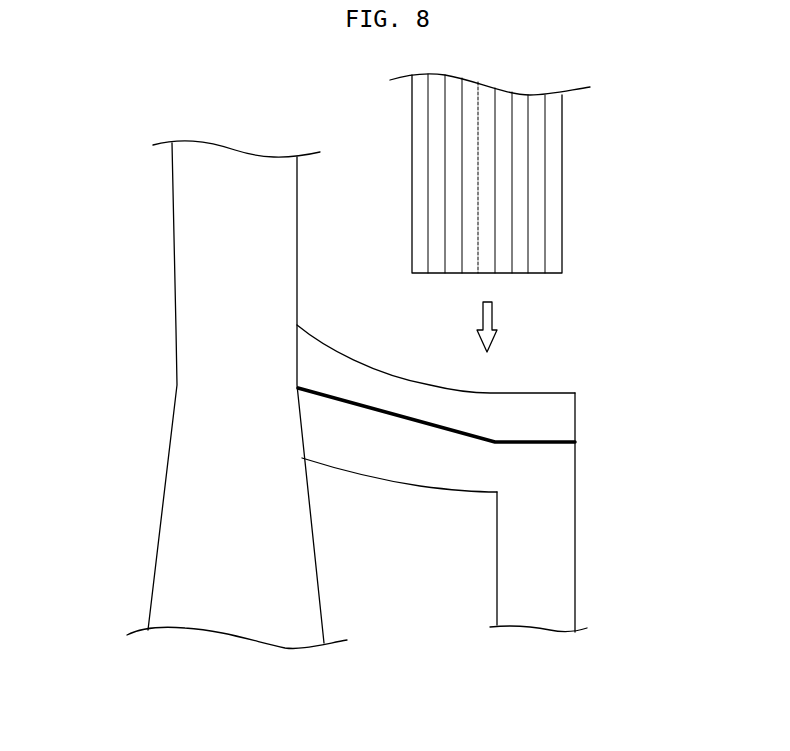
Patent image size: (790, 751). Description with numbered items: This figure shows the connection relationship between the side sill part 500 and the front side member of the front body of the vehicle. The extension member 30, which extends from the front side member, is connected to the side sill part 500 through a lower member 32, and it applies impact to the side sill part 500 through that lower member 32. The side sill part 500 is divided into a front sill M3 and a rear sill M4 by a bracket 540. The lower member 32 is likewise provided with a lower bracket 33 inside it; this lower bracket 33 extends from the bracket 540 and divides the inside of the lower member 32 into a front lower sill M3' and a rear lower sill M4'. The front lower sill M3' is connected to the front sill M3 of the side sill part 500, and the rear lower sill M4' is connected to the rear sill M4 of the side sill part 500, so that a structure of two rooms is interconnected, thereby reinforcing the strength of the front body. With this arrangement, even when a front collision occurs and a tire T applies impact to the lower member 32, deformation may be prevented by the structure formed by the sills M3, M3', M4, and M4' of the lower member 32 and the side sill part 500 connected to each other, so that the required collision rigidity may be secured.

The extension member 30 is at (165, 548).
The lower member 32 is at (410, 487).
The lower bracket 33 is at (423, 420).
The side sill part 500 is at (576, 595).
The bracket 540 is at (548, 443).
The tire T is at (553, 203).
The front sill M3 is at (601, 362).
The rear sill M4 is at (613, 532).
The front lower sill M3' is at (203, 365).
The rear lower sill M4' is at (205, 450).